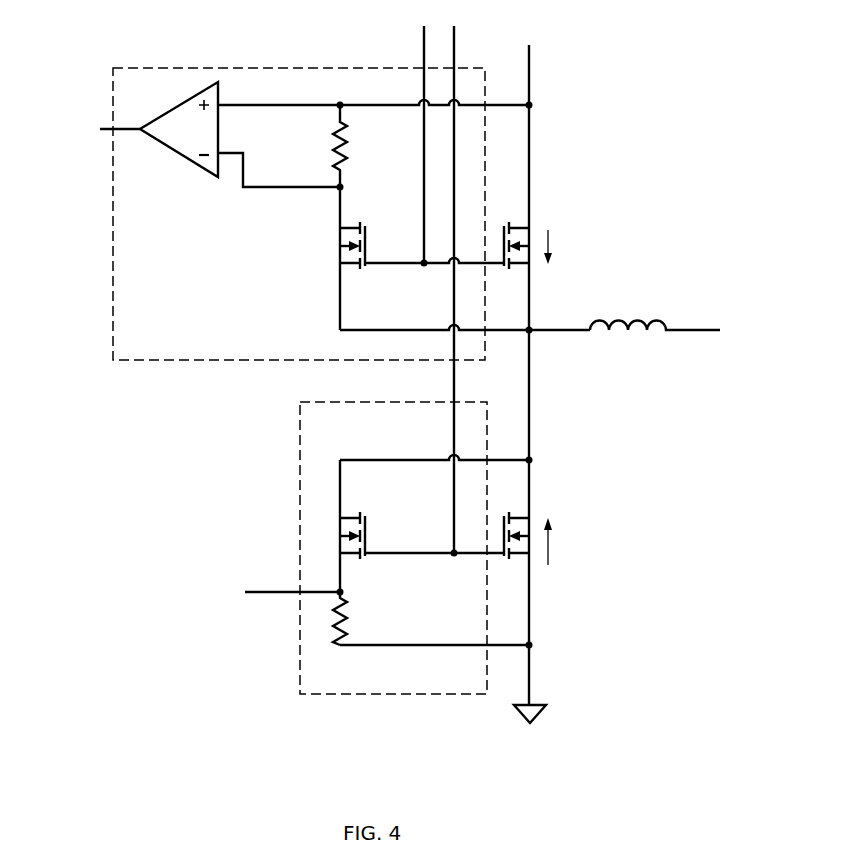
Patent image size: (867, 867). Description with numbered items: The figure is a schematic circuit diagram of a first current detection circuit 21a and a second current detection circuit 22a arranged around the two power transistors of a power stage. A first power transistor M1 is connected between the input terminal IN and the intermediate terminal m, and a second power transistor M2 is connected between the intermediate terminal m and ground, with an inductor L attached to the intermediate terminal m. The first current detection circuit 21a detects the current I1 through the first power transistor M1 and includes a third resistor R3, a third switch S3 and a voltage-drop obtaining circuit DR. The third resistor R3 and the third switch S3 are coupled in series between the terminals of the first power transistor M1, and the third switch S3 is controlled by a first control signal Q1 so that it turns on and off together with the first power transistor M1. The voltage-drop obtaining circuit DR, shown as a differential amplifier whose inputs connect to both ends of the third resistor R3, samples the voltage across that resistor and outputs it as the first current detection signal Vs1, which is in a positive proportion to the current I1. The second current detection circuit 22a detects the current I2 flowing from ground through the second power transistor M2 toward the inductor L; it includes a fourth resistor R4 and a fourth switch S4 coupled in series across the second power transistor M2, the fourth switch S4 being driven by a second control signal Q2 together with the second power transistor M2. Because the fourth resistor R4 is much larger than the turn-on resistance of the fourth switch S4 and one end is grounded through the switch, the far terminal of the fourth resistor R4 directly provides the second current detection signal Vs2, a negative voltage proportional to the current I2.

The first current detection circuit 21a is at (299, 239).
The second current detection circuit 22a is at (393, 569).
The voltage-drop obtaining circuit DR is at (240, 166).
The first current detection signal Vs1 is at (95, 131).
The second current detection signal Vs2 is at (271, 593).
The third resistor R3 is at (362, 146).
The fourth resistor R4 is at (359, 618).
The first control signal Q1 is at (419, 131).
The second control signal Q2 is at (461, 276).
The input terminal IN is at (528, 359).
The third switch S3 is at (422, 258).
The fourth switch S4 is at (422, 526).
The first power transistor M1 is at (512, 234).
The second power transistor M2 is at (512, 524).
The current through the first power transistor I1 is at (561, 247).
The current through the second power transistor I2 is at (561, 541).
The intermediate terminal m is at (465, 320).
The inductor L is at (655, 350).